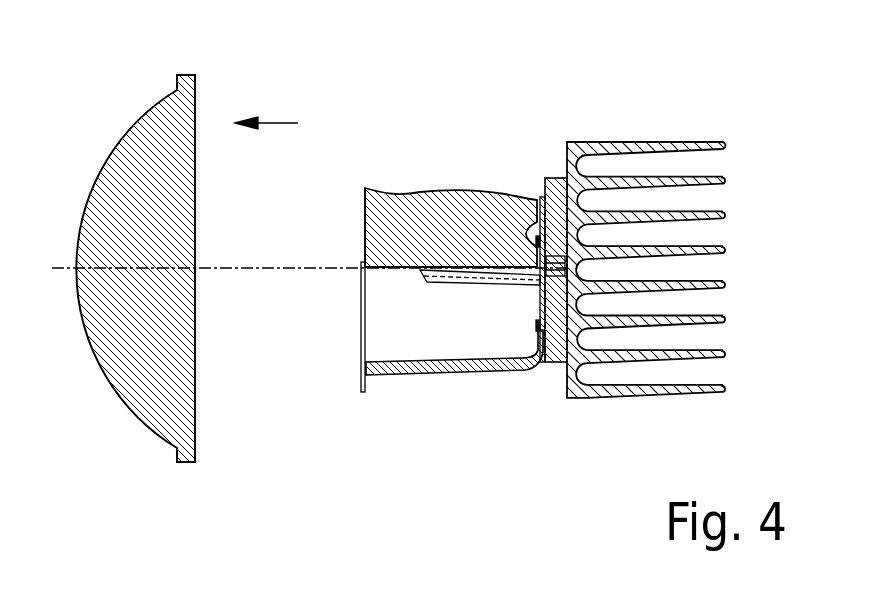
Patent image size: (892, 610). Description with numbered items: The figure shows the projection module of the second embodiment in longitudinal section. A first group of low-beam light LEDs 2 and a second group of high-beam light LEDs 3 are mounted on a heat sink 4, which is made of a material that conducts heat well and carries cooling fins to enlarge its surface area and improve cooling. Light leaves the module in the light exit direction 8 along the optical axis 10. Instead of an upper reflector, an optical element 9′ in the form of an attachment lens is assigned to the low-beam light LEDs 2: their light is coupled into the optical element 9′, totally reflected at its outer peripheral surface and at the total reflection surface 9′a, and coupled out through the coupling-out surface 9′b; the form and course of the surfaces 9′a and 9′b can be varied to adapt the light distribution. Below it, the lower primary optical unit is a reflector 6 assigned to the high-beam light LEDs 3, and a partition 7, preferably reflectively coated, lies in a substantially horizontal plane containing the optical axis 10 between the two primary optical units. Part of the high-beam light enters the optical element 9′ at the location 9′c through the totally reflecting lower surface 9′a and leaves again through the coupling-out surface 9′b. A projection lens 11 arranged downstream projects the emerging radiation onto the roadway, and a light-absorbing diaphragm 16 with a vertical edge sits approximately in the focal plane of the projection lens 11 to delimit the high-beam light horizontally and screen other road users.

The LEDs 2 is at (552, 215).
The LEDs 3 is at (547, 363).
The heat sink 4 is at (577, 143).
The reflector 6 is at (464, 377).
The partition 7 is at (465, 285).
The light exit direction 8 is at (278, 122).
The optical element 9′ is at (457, 215).
The total reflection surface 9′a is at (412, 282).
The coupling-out surface 9′b is at (352, 230).
The location 9′c is at (381, 282).
The optical axis 10 is at (272, 270).
The projection lens 11 is at (140, 392).
The diaphragm 16 is at (361, 340).